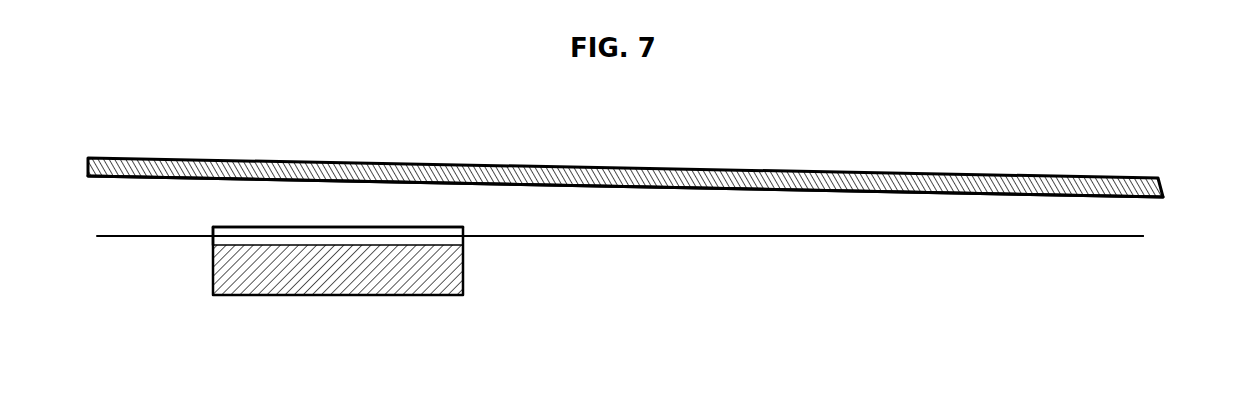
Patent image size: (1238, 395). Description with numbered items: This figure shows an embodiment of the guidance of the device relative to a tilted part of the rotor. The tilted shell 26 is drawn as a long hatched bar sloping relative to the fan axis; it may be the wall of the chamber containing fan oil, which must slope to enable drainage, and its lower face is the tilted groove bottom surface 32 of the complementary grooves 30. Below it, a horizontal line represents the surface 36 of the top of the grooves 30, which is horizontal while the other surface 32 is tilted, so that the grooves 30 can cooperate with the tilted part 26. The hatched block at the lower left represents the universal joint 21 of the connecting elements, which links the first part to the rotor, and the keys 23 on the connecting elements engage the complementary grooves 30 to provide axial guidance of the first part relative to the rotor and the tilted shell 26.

The universal joint 21 is at (340, 280).
The keys 23 is at (201, 246).
The tilted shell 26 is at (626, 178).
The complementary grooves 30 is at (676, 219).
The tilted groove bottom surface 32 is at (756, 193).
The top surface of the grooves 36 is at (605, 244).